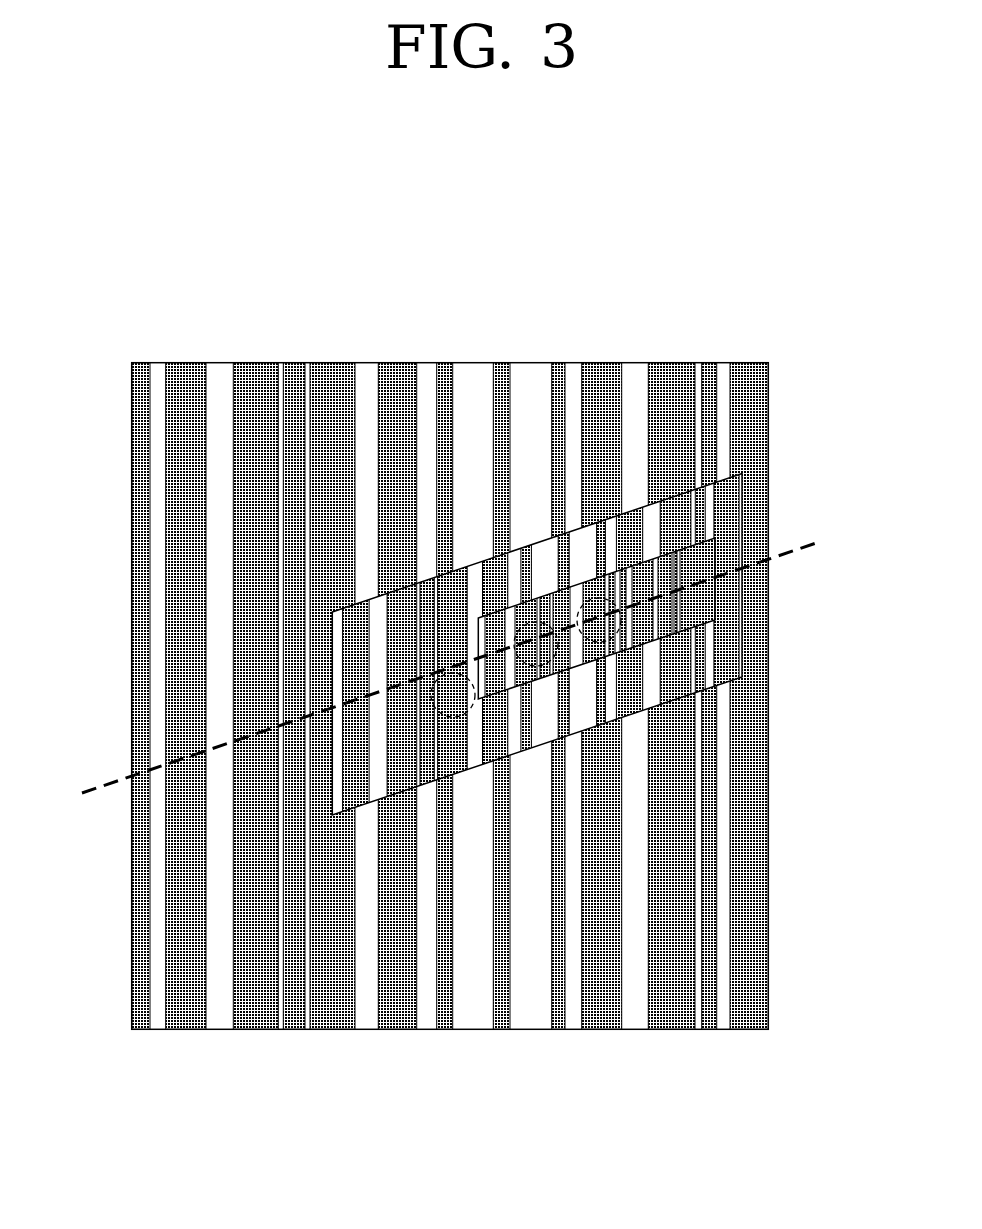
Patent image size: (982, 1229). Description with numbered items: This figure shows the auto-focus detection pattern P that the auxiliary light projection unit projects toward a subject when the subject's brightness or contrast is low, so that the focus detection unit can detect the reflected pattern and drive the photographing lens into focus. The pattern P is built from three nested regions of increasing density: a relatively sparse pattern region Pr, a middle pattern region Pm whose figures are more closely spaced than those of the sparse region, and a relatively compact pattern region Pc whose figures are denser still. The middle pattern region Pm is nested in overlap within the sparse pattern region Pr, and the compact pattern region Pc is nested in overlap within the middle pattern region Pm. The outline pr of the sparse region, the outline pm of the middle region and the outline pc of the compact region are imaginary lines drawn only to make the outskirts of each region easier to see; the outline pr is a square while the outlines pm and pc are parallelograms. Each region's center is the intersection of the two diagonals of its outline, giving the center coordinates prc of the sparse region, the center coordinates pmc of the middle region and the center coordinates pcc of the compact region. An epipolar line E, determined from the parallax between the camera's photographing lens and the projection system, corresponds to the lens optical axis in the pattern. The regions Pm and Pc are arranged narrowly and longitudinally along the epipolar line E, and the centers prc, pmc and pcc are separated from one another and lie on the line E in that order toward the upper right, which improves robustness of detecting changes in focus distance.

The auto-focus detection pattern P is at (561, 232).
The sparse pattern region Pr is at (222, 432).
The middle pattern region Pm is at (470, 595).
The compact pattern region Pc is at (555, 590).
The outline of the sparse pattern region pr is at (157, 362).
The outline of the middle pattern region pm is at (376, 592).
The outline of the compact pattern region pc is at (652, 548).
The center coordinates of the sparse pattern region prc is at (471, 713).
The center coordinates of the middle pattern region pmc is at (538, 667).
The center coordinates of the compact pattern region pcc is at (625, 632).
The epipolar line E is at (806, 541).